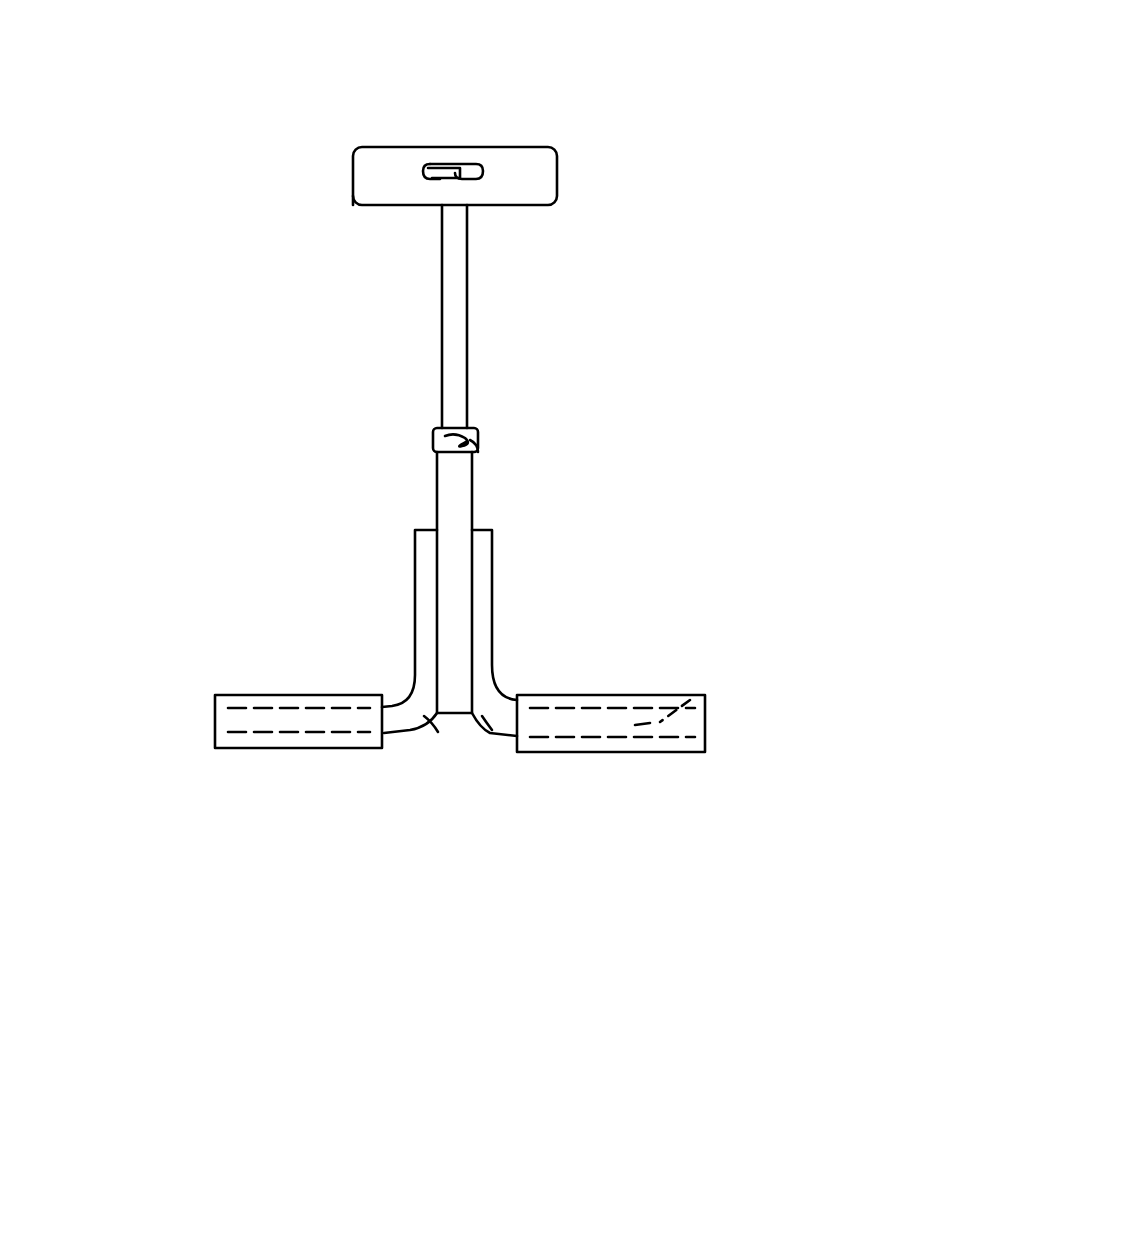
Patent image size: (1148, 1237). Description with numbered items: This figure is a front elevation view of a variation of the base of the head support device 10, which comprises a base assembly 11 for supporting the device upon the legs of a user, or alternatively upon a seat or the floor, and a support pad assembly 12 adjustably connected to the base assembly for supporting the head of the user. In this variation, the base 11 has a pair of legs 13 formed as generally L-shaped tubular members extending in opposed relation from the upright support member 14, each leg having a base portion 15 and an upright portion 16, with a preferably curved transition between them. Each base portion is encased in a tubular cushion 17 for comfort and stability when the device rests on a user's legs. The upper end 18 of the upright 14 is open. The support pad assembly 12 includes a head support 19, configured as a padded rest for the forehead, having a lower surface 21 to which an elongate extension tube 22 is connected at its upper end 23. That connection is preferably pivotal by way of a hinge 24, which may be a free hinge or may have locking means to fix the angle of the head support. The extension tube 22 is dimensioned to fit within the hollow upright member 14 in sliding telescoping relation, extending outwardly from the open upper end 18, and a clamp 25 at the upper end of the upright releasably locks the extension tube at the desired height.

The device 10 is at (624, 387).
The base assembly 11 is at (552, 644).
The support pad assembly 12 is at (498, 233).
The legs 13 is at (500, 716).
The upright support member 14 is at (450, 497).
The base portion 15 is at (694, 697).
The upright portion 16 is at (483, 586).
The cushion 17 is at (268, 695).
The upper end 18 is at (462, 452).
The head support 19 is at (355, 206).
The lower surface 21 is at (388, 175).
The extension tube 22 is at (450, 334).
The upper end 23 is at (445, 175).
The hinge 24 is at (436, 172).
The clamp 25 is at (432, 436).